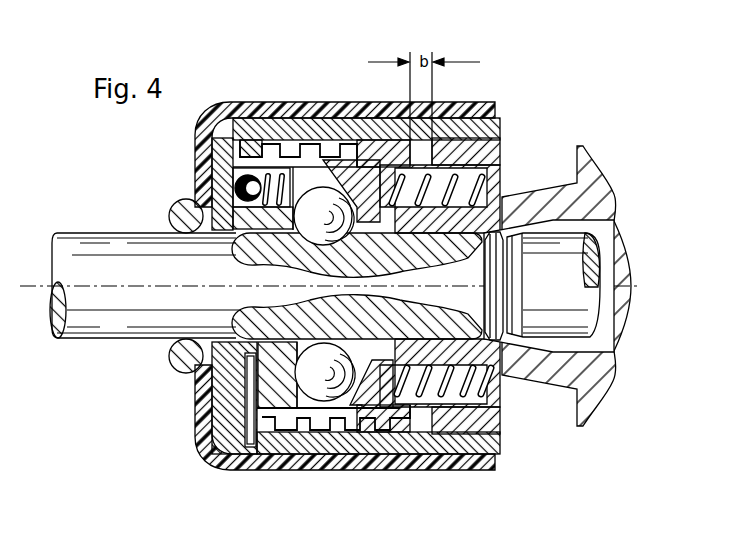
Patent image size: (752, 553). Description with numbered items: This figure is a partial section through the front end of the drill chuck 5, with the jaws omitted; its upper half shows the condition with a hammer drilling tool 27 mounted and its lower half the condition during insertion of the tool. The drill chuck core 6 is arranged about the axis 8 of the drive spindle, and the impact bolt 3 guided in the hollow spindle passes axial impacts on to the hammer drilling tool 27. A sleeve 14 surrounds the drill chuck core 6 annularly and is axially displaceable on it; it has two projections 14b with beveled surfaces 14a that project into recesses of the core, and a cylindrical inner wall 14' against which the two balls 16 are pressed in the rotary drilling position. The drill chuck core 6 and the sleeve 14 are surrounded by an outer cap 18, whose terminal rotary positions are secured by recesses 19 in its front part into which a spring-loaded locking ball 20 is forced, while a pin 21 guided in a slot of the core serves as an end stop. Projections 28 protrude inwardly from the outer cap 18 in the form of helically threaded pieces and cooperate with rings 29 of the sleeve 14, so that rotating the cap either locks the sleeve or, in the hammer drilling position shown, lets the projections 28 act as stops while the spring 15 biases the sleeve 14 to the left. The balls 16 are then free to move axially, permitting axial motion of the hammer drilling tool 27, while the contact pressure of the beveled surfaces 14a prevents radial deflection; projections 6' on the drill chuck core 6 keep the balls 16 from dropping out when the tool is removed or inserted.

The impact bolt 3 is at (588, 319).
The drill chuck 5 is at (516, 114).
The drill chuck core 6 is at (557, 287).
The projections 6' is at (340, 331).
The axis 8 is at (42, 283).
The sleeve 14 is at (383, 115).
The beveled surfaces 14a is at (325, 168).
The projections 14b is at (379, 398).
The cylindrical inner wall 14' is at (333, 452).
The spring 15 is at (482, 173).
The balls 16 is at (308, 348).
The outer cap 18 is at (272, 124).
The recesses 19 is at (236, 192).
The locking ball 20 is at (242, 196).
The pin 21 is at (246, 416).
The hammer drilling tool 27 is at (90, 320).
The projections 28 is at (290, 143).
The rings 29 is at (251, 146).